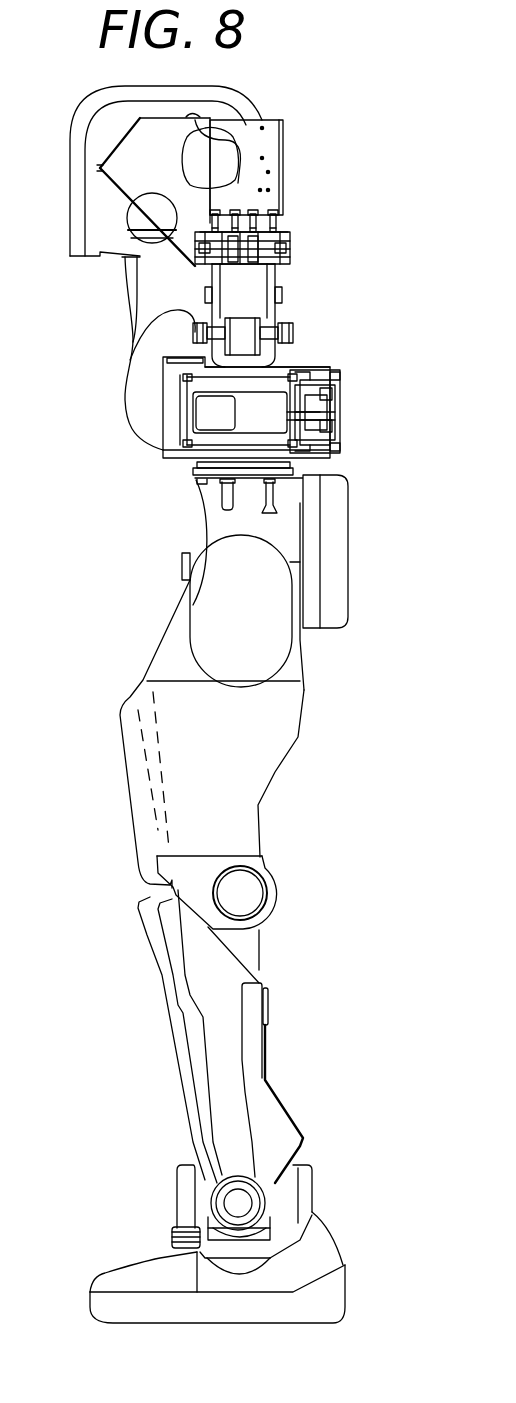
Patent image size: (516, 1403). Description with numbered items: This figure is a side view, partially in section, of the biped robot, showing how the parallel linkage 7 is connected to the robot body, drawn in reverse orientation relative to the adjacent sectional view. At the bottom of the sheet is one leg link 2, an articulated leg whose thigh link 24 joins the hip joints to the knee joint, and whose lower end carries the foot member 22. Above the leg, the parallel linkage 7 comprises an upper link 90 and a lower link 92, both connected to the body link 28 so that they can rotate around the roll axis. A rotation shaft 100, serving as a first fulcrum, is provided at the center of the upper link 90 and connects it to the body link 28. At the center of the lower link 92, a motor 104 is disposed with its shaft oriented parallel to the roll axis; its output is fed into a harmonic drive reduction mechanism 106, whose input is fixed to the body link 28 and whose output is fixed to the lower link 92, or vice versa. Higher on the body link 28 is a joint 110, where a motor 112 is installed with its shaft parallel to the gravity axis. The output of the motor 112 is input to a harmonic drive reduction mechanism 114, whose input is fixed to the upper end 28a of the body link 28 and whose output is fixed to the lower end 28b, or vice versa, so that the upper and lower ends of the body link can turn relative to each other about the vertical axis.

The leg link 2 is at (124, 684).
The parallel linkage 7 is at (248, 419).
The foot member 22 is at (118, 1277).
The thigh link 24 is at (230, 520).
The body link 28 is at (255, 370).
The upper end of the body link 28a is at (283, 153).
The lower end of the body link 28b is at (272, 310).
The upper link 90 is at (212, 342).
The lower link 92 is at (212, 453).
The rotation shaft 100 is at (193, 333).
The motor 104 is at (290, 424).
The harmonic drive reduction mechanism 106 is at (340, 427).
The joint 110 is at (300, 240).
The motor 112 is at (255, 292).
The harmonic drive reduction mechanism 114 is at (283, 272).